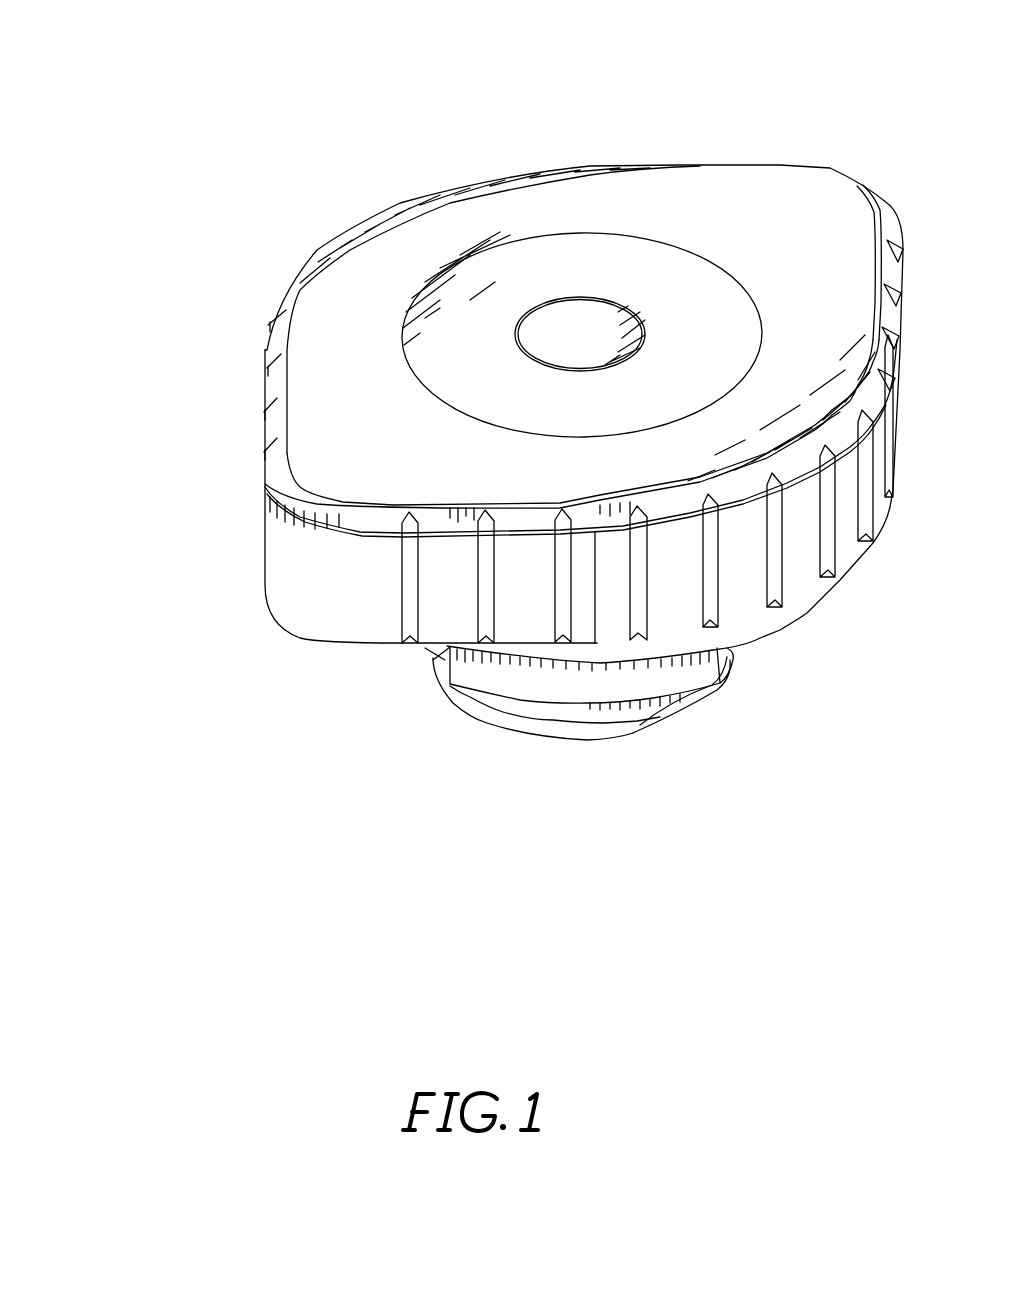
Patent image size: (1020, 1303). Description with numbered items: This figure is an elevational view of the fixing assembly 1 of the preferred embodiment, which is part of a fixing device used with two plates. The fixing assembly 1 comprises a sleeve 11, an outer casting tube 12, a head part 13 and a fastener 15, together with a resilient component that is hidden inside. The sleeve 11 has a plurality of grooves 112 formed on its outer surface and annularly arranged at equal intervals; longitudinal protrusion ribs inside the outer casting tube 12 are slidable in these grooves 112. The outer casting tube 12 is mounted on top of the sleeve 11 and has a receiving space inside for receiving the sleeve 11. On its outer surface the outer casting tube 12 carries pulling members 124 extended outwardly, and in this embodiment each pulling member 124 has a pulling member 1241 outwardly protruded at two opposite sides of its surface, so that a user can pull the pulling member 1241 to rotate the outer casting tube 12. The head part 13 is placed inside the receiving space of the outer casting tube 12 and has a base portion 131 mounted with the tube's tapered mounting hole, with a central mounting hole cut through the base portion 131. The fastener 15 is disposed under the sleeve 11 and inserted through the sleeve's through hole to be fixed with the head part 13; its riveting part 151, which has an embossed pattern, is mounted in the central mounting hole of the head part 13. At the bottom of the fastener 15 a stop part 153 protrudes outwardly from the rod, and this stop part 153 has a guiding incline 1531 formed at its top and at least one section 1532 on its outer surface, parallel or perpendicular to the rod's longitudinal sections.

The fixing assembly 1 is at (320, 648).
The sleeve 11 is at (495, 680).
The grooves 112 is at (442, 647).
The outer casting tube 12 is at (305, 440).
The pulling members 124 is at (145, 541).
The pulling member 1241 is at (283, 556).
The head part 13 is at (175, 289).
The base portion 131 is at (425, 330).
The fastener 15 is at (613, 98).
The riveting part 151 is at (570, 322).
The stop part 153 is at (607, 730).
The guiding incline 1531 is at (565, 717).
The section 1532 is at (677, 703).